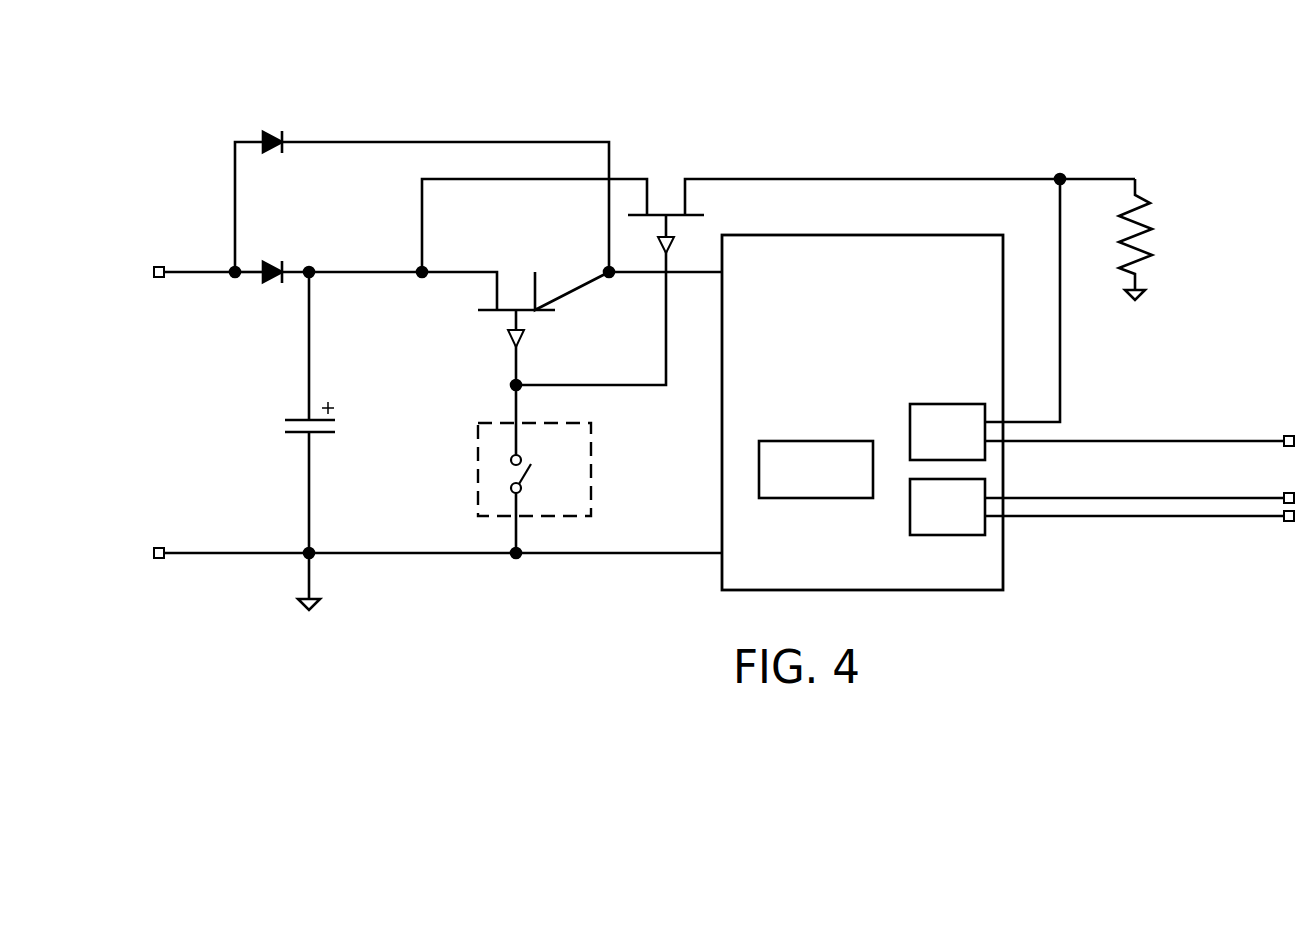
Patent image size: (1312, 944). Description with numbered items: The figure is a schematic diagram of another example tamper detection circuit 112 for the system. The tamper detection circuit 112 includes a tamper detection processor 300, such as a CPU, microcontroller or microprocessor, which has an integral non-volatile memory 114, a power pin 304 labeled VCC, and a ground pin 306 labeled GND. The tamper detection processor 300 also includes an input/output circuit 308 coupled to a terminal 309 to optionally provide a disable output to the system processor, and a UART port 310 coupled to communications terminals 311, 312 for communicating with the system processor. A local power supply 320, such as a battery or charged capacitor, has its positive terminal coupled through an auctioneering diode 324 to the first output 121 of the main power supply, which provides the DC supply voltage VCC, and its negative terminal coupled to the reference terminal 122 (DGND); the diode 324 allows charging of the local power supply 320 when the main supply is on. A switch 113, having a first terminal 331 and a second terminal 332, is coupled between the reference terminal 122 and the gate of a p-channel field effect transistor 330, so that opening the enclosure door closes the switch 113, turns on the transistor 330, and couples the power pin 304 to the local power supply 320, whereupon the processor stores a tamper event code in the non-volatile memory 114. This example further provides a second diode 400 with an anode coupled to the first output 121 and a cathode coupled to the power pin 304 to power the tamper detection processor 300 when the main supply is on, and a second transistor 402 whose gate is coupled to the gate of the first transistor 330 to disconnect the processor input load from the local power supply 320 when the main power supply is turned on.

The tamper detection circuit 112 is at (165, 55).
The switch 113 is at (477, 462).
The non-volatile memory 114 is at (776, 441).
The first output 121 is at (177, 278).
The reference terminal 122 is at (177, 559).
The tamper detection processor 300 is at (795, 234).
The power pin 304 is at (647, 277).
The ground pin 306 is at (627, 553).
The input/output circuit 308 is at (929, 403).
The terminal 309 is at (1209, 441).
The UART port 310 is at (931, 536).
The communications terminal 311 is at (1209, 498).
The communications terminal 312 is at (1209, 516).
The local power supply 320 is at (290, 418).
The auctioneering diode 324 is at (265, 283).
The p-channel field effect transistor 330 is at (513, 262).
The first terminal 331 is at (514, 406).
The second terminal 332 is at (514, 538).
The second diode 400 is at (266, 133).
The second transistor 402 is at (645, 150).